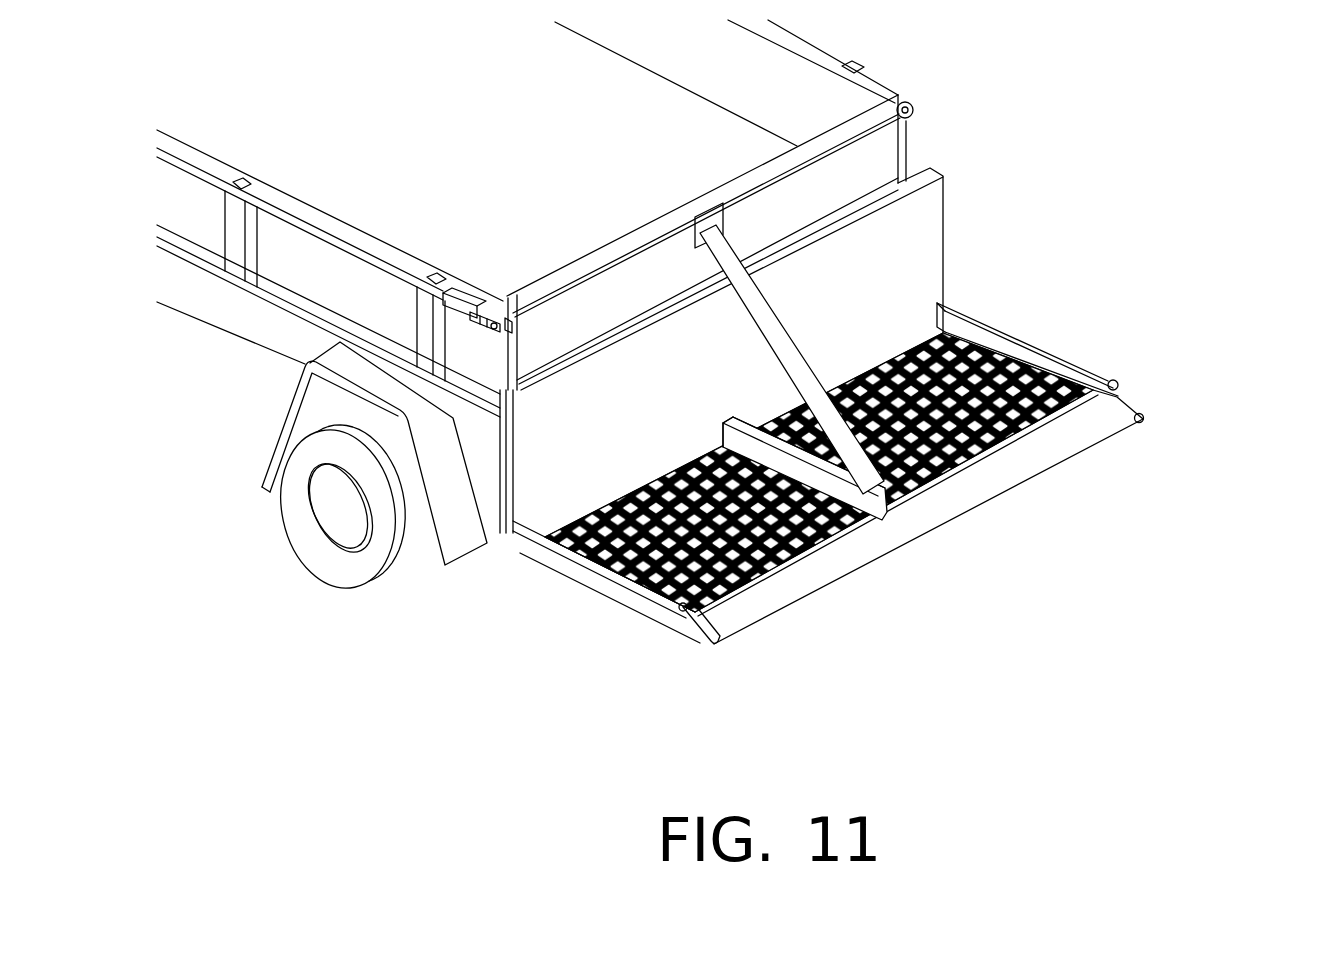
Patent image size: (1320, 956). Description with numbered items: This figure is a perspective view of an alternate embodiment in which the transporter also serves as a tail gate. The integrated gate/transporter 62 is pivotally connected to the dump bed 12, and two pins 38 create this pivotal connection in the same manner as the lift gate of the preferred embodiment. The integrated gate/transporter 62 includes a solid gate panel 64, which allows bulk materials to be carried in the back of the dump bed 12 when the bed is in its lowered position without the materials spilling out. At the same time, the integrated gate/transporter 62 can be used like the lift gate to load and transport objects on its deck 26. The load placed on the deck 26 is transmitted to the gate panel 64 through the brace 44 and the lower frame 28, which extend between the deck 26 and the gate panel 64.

The dump bed 12 is at (812, 116).
The gate panel 64 is at (808, 195).
The pins 38 is at (506, 296).
The brace 44 is at (795, 355).
The integrated gate/transporter 62 is at (1160, 303).
The lower frame 28 is at (565, 560).
The deck 26 is at (681, 610).